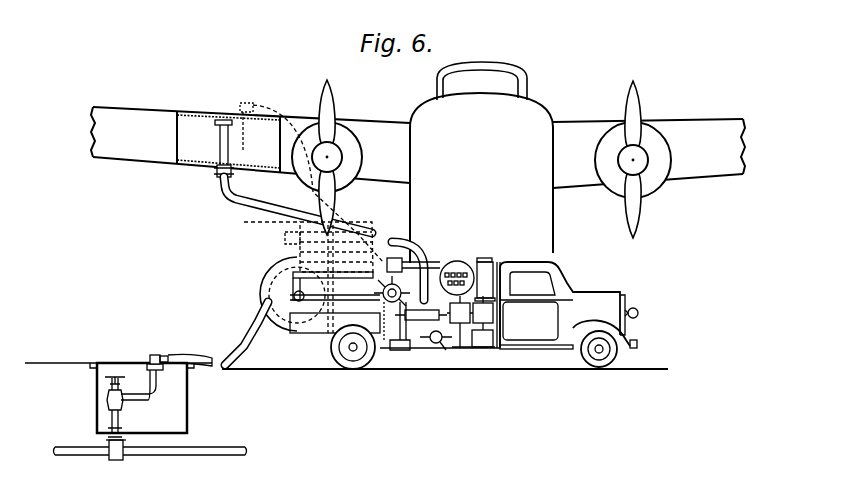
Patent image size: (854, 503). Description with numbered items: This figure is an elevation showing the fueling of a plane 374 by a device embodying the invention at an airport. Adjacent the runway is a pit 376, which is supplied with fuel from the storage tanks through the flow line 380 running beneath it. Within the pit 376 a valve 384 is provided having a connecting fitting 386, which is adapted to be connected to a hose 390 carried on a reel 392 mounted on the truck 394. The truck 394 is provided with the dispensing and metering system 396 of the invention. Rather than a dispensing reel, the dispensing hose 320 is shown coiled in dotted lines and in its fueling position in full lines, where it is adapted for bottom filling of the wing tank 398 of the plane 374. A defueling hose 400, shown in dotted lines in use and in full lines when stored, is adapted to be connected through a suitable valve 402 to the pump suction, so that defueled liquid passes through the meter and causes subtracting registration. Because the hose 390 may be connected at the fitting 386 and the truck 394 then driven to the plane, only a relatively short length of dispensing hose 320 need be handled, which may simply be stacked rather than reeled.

The dispensing hose 320 is at (288, 243).
The plane 374 is at (545, 108).
The pit 376 is at (188, 397).
The flow line 380 is at (180, 456).
The valve 384 is at (118, 376).
The connecting fitting 386 is at (158, 351).
The hose 390 is at (258, 307).
The reel 392 is at (272, 272).
The truck 394 is at (393, 348).
The system 396 is at (447, 332).
The wing tank 398 is at (193, 124).
The defueling hose 400 is at (346, 222).
The valve 402 is at (433, 343).